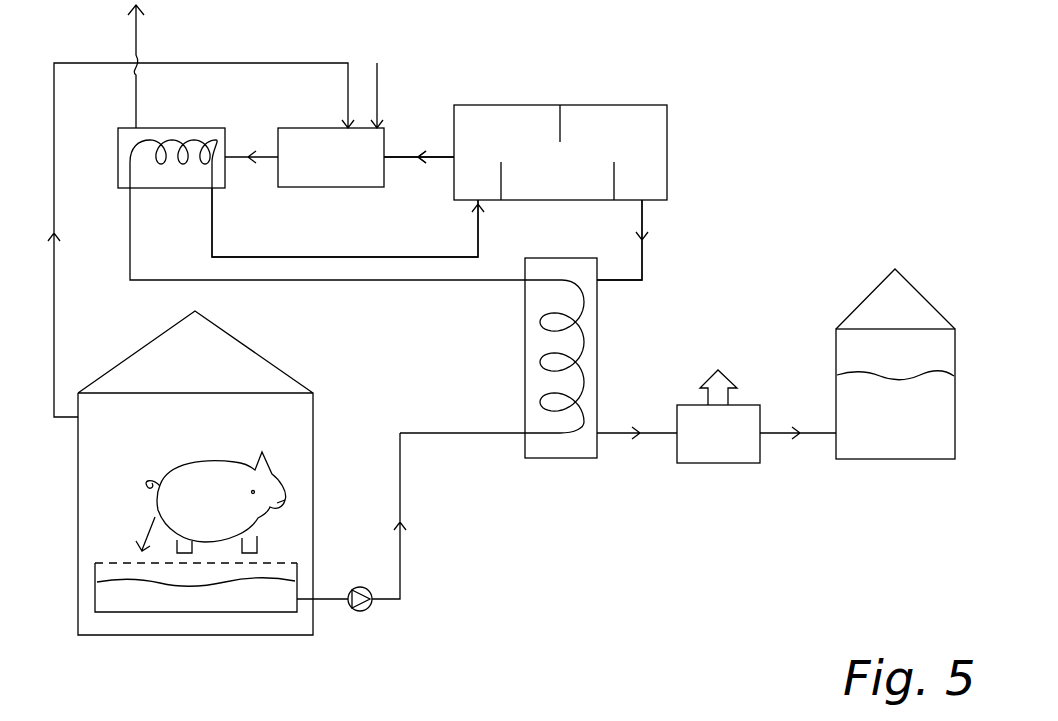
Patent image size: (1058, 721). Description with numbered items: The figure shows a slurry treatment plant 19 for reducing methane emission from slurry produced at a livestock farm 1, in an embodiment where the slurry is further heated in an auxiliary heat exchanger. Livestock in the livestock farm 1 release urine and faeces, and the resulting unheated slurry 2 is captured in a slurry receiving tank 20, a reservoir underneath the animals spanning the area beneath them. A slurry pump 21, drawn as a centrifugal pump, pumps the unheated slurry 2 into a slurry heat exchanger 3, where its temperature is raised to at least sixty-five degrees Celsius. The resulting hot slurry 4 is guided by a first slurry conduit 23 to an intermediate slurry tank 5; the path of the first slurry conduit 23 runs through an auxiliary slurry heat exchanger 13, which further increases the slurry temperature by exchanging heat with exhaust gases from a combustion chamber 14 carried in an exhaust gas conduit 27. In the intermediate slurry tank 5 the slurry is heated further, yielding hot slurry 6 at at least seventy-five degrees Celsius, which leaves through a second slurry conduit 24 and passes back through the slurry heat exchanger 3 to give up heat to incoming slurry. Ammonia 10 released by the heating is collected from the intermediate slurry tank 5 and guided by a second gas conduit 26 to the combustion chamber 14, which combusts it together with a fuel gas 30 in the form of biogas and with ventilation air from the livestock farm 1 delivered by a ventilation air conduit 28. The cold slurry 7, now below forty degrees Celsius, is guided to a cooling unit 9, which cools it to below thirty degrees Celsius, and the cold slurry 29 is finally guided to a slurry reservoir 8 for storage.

The livestock farm 1 is at (315, 425).
The unheated slurry 2 is at (142, 600).
The slurry heat exchanger 3 is at (600, 345).
The hot slurry (at least 65° Celsius) 4 is at (363, 306).
The intermediate slurry tank 5 is at (612, 105).
The hot slurry (at least 75° Celsius) 6 is at (643, 270).
The cold slurry (at least below 40° Celsius) 7 is at (622, 434).
The slurry reservoir 8 is at (900, 459).
The cooling unit 9 is at (718, 463).
The ammonia 10 is at (435, 158).
The auxiliary slurry heat exchanger 13 is at (190, 128).
The combustion chamber 14 is at (325, 187).
The slurry treatment plant 19 is at (846, 117).
The slurry receiving tank 20 is at (210, 612).
The slurry pump 21 is at (358, 612).
The first slurry conduit 23 is at (363, 306).
The second slurry conduit 24 is at (643, 270).
The second gas conduit 26 is at (435, 158).
The exhaust gas conduit 27 is at (137, 33).
The ventilation air conduit 28 is at (55, 313).
The cold slurry (at least below 30° Celsius) 29 is at (815, 437).
The fuel gas 30 is at (378, 80).